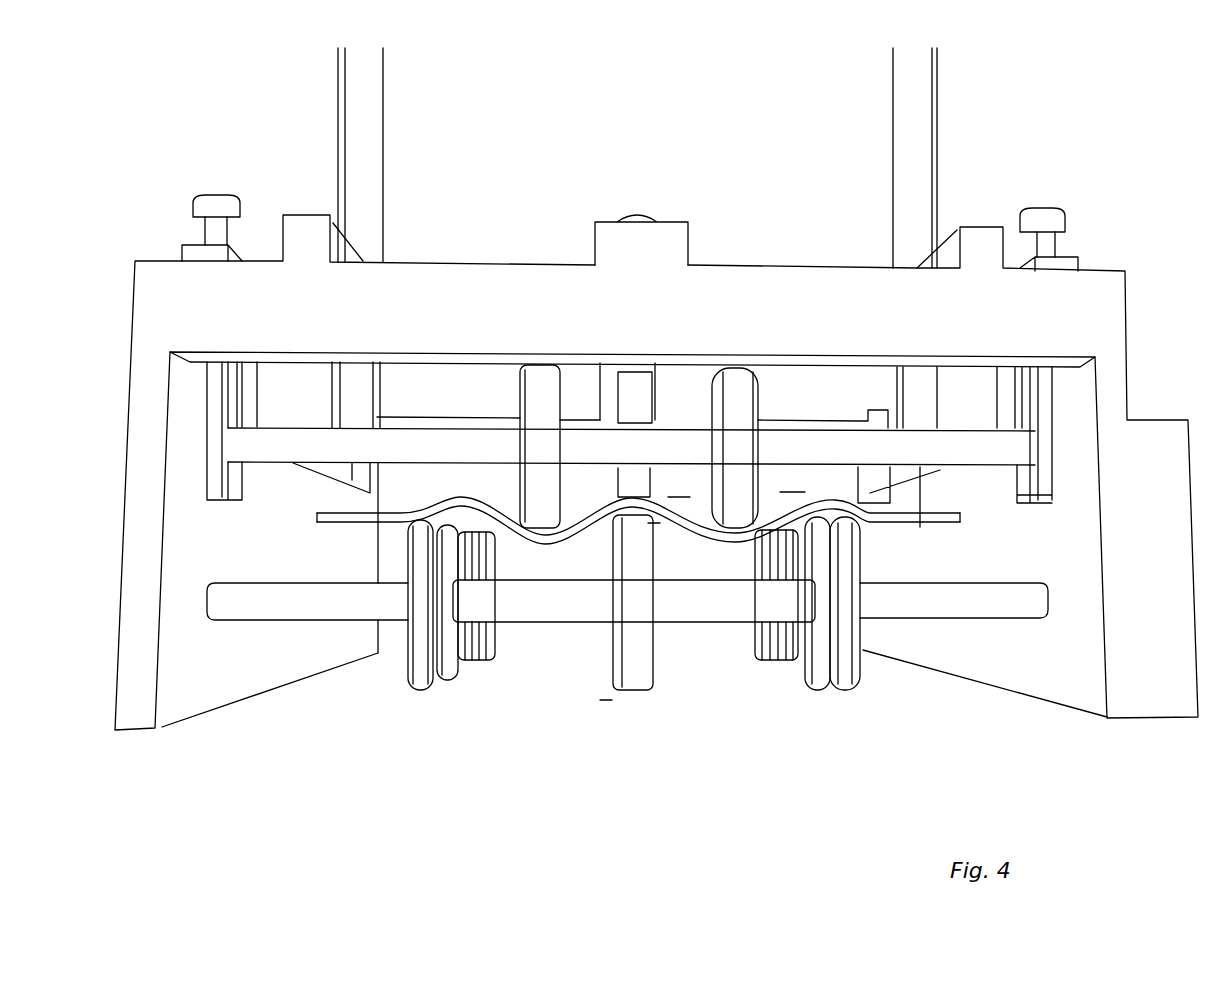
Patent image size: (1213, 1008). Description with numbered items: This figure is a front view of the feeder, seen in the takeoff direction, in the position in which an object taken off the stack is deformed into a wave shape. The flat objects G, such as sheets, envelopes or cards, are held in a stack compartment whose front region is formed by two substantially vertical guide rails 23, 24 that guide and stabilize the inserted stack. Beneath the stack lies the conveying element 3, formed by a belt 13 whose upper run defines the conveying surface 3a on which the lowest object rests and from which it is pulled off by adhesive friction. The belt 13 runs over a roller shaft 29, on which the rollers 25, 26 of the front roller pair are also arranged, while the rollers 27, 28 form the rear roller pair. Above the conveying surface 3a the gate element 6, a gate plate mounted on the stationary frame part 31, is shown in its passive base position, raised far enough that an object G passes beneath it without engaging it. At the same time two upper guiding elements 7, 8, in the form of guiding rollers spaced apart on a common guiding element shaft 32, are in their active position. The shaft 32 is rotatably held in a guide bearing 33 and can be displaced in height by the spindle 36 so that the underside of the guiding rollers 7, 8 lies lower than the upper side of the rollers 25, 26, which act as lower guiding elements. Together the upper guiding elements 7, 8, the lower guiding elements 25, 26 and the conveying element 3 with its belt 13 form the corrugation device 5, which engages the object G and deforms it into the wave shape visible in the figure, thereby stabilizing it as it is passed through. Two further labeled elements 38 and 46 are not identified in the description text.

The conveying element 3 is at (605, 707).
The conveying surface 3a is at (657, 523).
The corrugation device 5 is at (792, 492).
The gate element 6 is at (635, 400).
The guiding element 7 is at (743, 410).
The guiding element 8 is at (533, 398).
The belt 13 is at (637, 663).
The guide rail 23 is at (368, 170).
The guide rail 24 is at (910, 163).
The roller 25 is at (813, 657).
The roller 26 is at (460, 667).
The roller 27 is at (760, 633).
The roller 28 is at (493, 633).
The roller shaft 29 is at (627, 601).
The frame part 31 is at (641, 240).
The guiding element shaft 32 is at (631, 432).
The guide bearing 33 is at (232, 497).
The spindle 36 is at (217, 233).
The housing 38 is at (656, 472).
The gap 46 is at (677, 497).
The flat object G is at (352, 517).